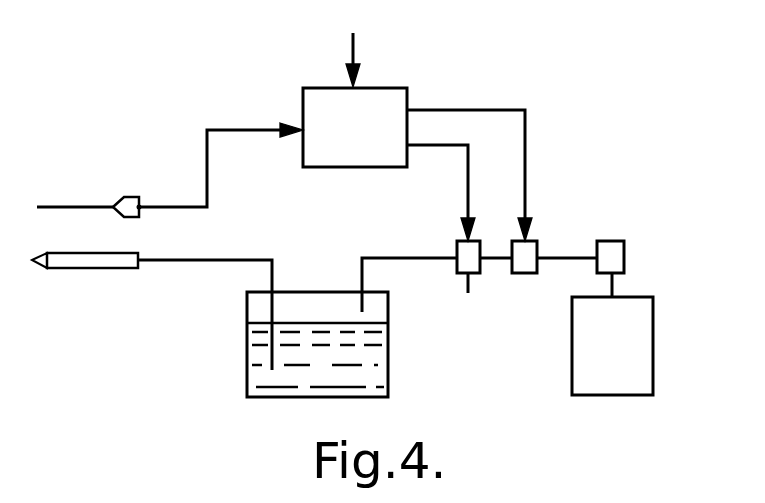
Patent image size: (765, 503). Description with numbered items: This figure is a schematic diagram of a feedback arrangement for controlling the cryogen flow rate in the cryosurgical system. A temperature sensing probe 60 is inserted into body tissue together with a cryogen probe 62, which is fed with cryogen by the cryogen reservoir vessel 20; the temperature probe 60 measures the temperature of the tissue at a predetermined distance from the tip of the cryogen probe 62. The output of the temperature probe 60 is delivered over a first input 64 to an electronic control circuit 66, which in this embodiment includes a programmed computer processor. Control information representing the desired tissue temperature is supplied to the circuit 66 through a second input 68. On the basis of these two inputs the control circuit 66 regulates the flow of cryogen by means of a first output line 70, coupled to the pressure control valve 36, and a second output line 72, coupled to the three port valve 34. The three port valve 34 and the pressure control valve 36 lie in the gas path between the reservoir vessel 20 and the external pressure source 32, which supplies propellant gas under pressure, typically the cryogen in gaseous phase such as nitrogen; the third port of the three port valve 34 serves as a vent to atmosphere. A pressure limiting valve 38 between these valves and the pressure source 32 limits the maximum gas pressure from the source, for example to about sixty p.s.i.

The reservoir vessel 20 is at (298, 392).
The pressure source 32 is at (647, 347).
The three port valve 34 is at (453, 248).
The pressure control valve 36 is at (517, 275).
The pressure limiting valve 38 is at (617, 252).
The temperature sensing probe 60 is at (75, 206).
The cryogen probe 62 is at (90, 263).
The first input 64 is at (247, 128).
The electronic control circuit 66 is at (392, 97).
The second input 68 is at (352, 50).
The first output line 70 is at (525, 127).
The second output line 72 is at (468, 180).